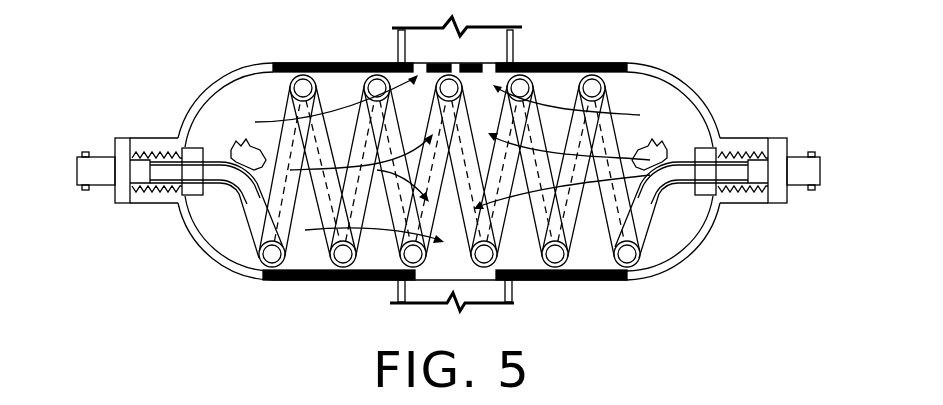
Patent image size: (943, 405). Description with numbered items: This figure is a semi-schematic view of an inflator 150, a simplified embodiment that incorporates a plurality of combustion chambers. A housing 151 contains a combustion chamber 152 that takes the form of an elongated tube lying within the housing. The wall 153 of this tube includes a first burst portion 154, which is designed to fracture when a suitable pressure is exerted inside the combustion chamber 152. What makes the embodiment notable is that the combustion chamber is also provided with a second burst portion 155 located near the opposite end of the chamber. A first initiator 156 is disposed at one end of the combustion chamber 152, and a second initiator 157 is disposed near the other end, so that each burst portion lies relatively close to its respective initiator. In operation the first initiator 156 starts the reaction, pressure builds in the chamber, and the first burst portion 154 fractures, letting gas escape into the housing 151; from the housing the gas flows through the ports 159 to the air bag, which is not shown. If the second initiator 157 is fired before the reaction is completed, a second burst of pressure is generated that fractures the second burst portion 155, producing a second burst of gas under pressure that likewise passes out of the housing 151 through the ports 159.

The inflator 150 is at (592, 38).
The housing 151 is at (220, 267).
The combustion chamber 152 is at (252, 215).
The wall 153 is at (340, 262).
The first burst portion 154 is at (233, 147).
The second burst portion 155 is at (672, 150).
The first initiator 156 is at (123, 207).
The second initiator 157 is at (810, 152).
The ports 159 is at (472, 47).